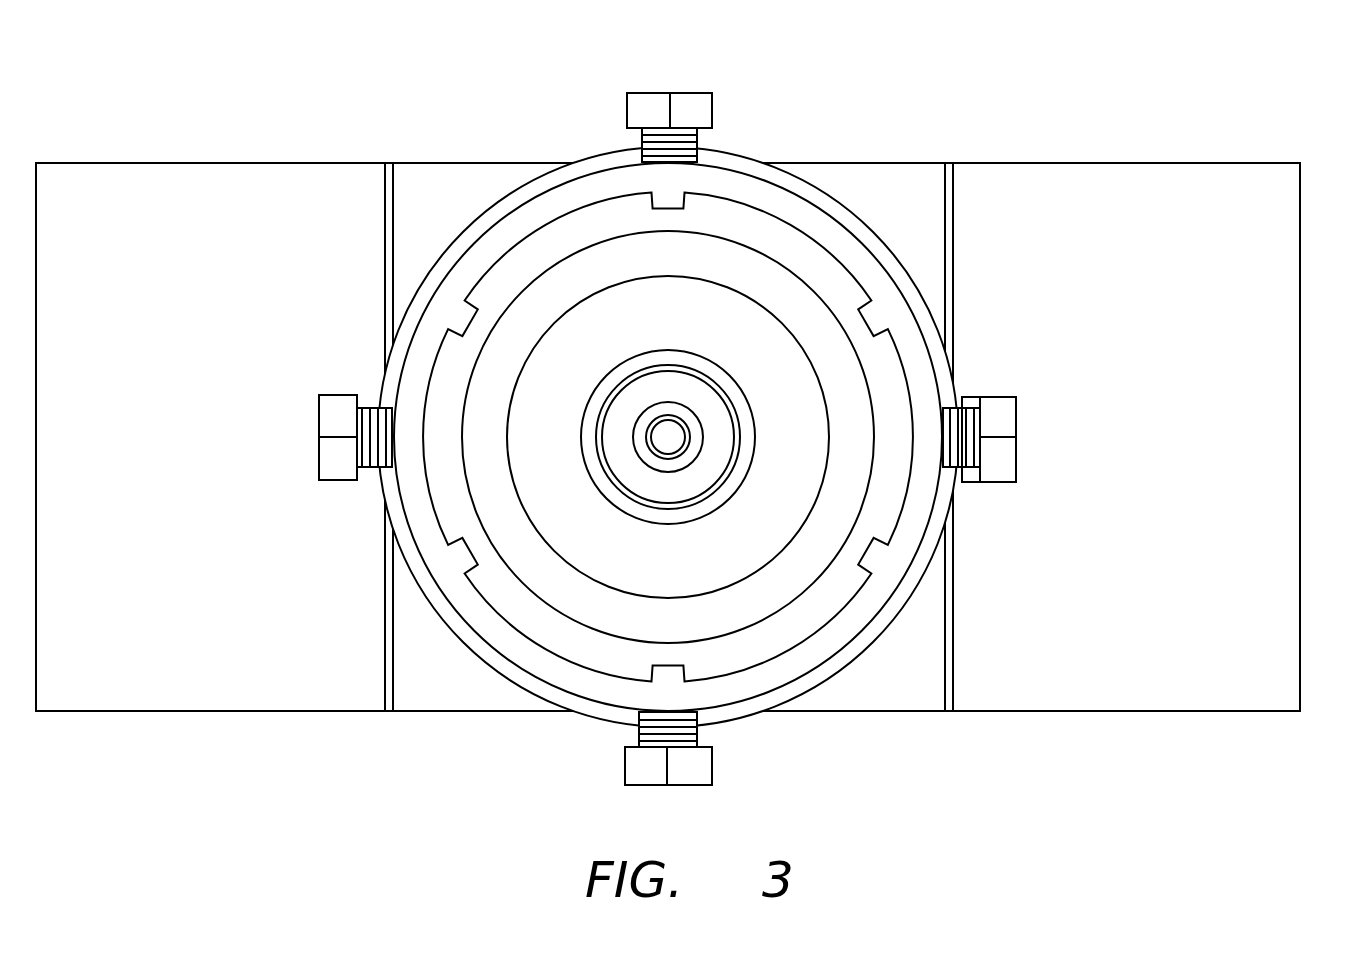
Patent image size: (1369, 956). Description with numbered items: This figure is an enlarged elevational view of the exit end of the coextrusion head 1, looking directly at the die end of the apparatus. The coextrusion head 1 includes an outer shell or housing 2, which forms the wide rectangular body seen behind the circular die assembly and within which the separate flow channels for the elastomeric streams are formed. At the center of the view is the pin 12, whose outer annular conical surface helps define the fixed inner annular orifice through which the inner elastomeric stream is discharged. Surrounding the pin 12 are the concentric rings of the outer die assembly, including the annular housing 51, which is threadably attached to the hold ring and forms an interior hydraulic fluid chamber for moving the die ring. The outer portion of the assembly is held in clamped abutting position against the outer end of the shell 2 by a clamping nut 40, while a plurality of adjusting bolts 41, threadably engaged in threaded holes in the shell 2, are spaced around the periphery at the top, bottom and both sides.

The coextrusion head 1 is at (992, 157).
The outer shell or housing 2 is at (212, 198).
The pin 12 is at (700, 473).
The clamping nut 40 is at (788, 636).
The adjusting bolts 41 is at (693, 103).
The annular housing 51 is at (530, 530).